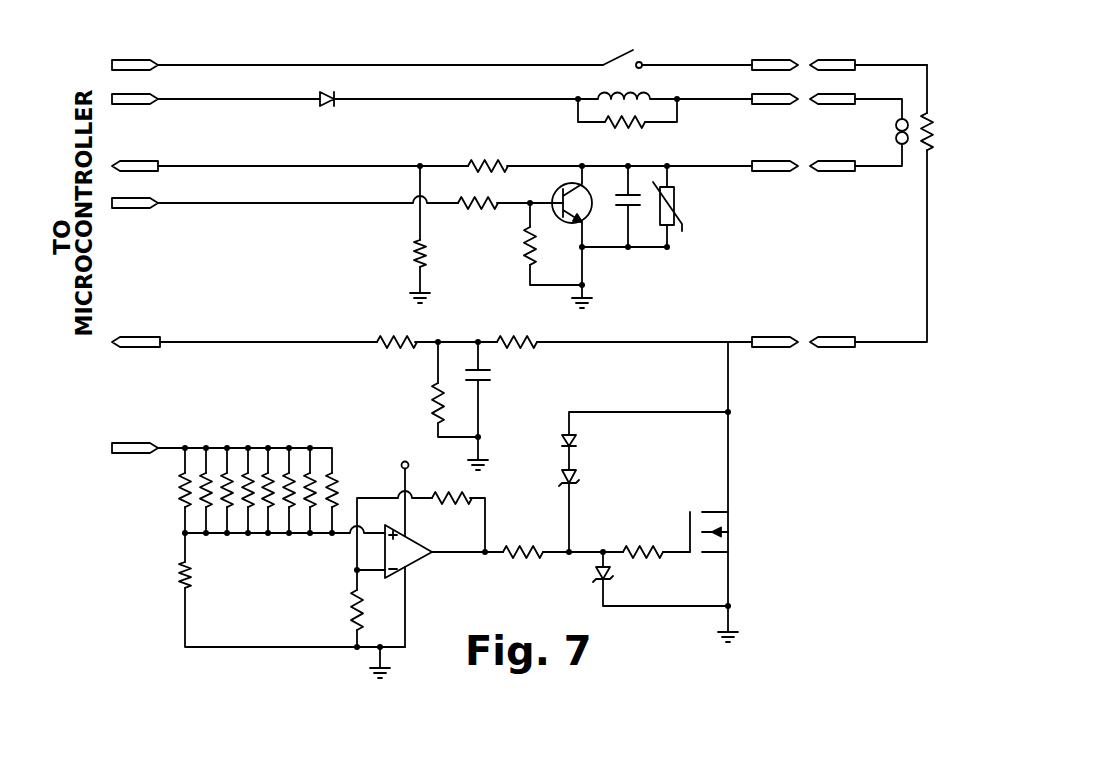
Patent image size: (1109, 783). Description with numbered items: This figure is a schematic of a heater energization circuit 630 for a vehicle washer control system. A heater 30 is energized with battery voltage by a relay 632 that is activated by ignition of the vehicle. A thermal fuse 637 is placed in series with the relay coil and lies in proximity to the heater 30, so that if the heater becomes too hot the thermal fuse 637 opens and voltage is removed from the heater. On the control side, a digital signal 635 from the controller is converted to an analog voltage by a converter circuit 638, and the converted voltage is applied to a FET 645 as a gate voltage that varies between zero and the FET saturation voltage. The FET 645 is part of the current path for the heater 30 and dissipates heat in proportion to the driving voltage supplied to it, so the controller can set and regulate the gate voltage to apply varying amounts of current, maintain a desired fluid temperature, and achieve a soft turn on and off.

The relay 632 is at (645, 94).
The heater 30 is at (926, 118).
The thermal fuse 637 is at (895, 126).
The converter circuit 638 is at (340, 453).
The digital signal 635 is at (141, 456).
The heater energization circuit 630 is at (778, 505).
The FET 645 is at (716, 537).